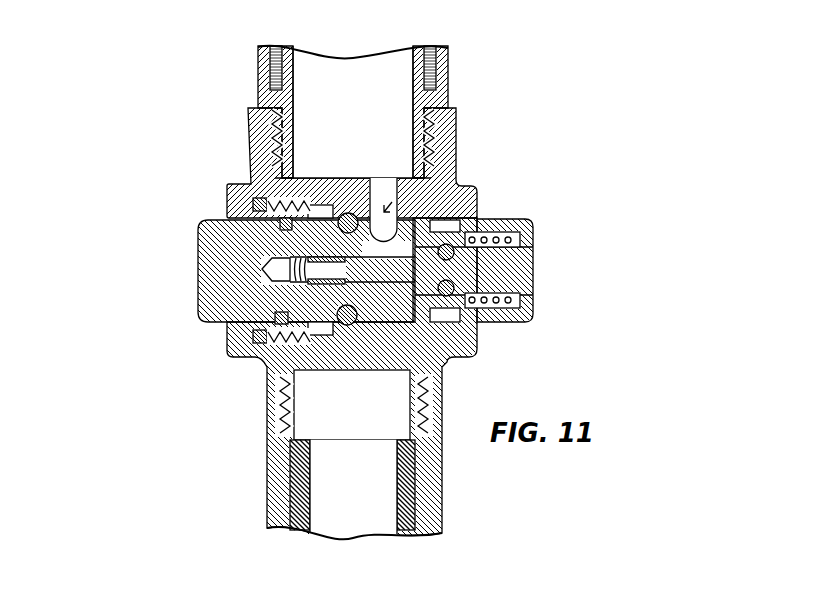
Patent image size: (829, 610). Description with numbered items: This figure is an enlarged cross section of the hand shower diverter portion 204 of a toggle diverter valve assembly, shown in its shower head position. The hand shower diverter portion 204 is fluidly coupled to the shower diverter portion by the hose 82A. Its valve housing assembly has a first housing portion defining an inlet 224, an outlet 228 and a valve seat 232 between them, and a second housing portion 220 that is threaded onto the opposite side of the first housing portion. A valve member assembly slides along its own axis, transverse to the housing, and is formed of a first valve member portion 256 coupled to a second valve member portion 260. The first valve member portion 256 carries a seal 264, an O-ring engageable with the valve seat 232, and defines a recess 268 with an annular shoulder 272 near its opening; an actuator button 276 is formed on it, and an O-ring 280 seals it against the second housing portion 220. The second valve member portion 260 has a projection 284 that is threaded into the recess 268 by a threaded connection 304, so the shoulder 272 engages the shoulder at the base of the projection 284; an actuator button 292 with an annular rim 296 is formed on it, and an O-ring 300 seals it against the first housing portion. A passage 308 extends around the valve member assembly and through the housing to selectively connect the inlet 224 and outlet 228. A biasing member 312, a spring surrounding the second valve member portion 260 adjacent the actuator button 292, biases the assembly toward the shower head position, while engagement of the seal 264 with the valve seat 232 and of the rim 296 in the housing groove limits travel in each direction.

The hose 82A is at (300, 532).
The hand shower diverter portion 204 is at (687, 131).
The second housing portion 220 is at (236, 358).
The inlet 224 is at (470, 480).
The outlet 228 is at (508, 20).
The valve seat 232 is at (383, 198).
The first valve member portion 256 is at (92, 262).
The second valve member portion 260 is at (553, 199).
The seal 264 is at (345, 212).
The recess 268 is at (292, 282).
The annular shoulder 272 is at (367, 210).
The actuator button 276 is at (200, 268).
The O-ring 280 is at (280, 221).
The projection 284 is at (322, 330).
The actuator button 292 is at (532, 268).
The annular rim 296 is at (485, 323).
The O-ring 300 is at (466, 215).
The threaded connection 304 is at (305, 335).
The passage 308 is at (412, 190).
The biasing member 312 is at (535, 232).